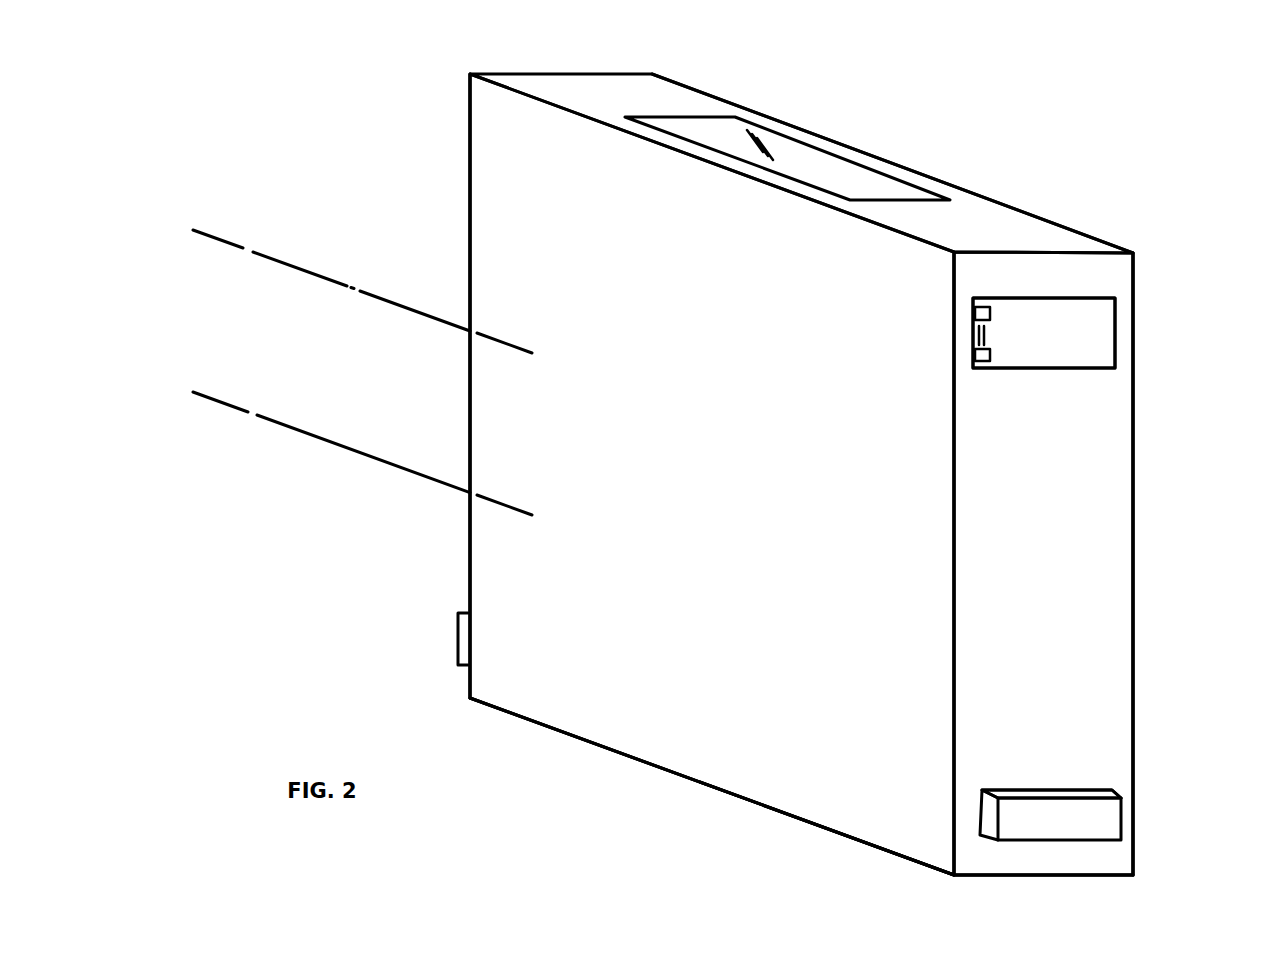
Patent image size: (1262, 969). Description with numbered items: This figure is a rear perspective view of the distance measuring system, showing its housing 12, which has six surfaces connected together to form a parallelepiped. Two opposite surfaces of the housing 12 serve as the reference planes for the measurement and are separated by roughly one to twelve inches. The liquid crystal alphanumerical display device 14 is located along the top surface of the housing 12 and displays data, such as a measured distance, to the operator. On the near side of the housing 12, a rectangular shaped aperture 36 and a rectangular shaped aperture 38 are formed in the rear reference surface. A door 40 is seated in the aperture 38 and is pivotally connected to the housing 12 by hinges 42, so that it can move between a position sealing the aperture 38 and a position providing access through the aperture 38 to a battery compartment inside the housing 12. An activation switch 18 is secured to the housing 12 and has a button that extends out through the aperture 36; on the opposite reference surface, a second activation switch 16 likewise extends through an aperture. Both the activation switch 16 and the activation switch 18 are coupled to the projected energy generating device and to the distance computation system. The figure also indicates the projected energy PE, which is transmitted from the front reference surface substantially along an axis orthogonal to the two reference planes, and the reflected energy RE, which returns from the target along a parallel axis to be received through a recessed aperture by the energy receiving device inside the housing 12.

The housing 12 is at (1062, 224).
The alphanumerical display device 14 is at (806, 156).
The activation switch 16 is at (462, 657).
The activation switch 18 is at (1110, 822).
The rectangular shaped aperture 36 is at (1028, 790).
The rectangular shaped aperture 38 is at (1000, 368).
The door 40 is at (1097, 310).
The hinges 42 is at (976, 310).
The reflected energy RE is at (308, 270).
The projected energy PE is at (366, 461).